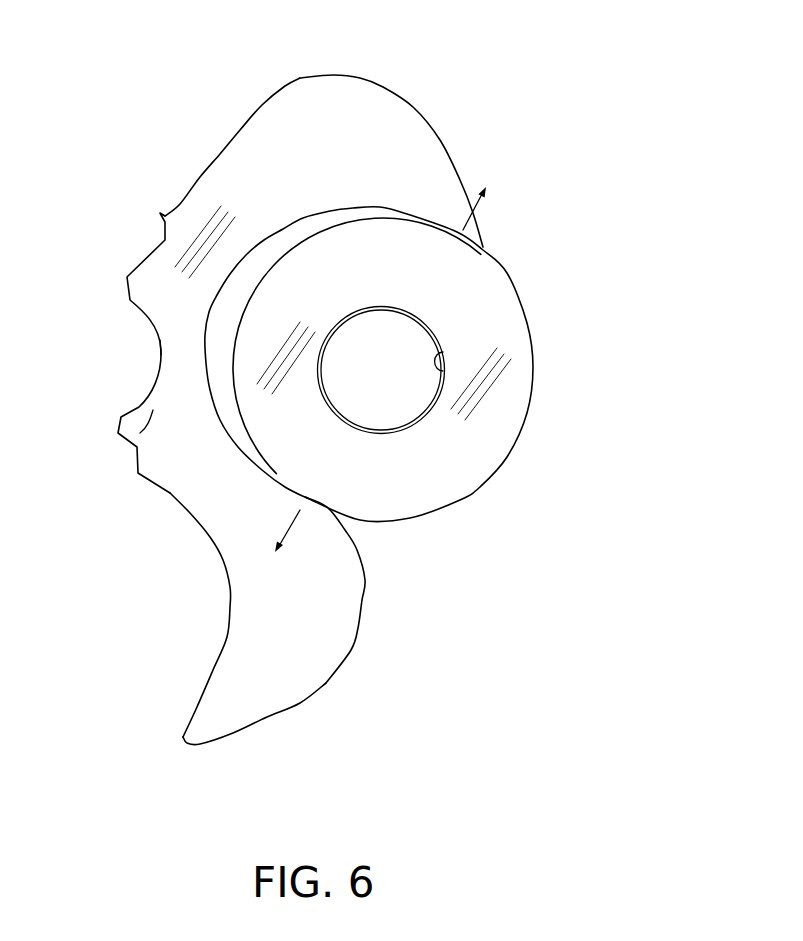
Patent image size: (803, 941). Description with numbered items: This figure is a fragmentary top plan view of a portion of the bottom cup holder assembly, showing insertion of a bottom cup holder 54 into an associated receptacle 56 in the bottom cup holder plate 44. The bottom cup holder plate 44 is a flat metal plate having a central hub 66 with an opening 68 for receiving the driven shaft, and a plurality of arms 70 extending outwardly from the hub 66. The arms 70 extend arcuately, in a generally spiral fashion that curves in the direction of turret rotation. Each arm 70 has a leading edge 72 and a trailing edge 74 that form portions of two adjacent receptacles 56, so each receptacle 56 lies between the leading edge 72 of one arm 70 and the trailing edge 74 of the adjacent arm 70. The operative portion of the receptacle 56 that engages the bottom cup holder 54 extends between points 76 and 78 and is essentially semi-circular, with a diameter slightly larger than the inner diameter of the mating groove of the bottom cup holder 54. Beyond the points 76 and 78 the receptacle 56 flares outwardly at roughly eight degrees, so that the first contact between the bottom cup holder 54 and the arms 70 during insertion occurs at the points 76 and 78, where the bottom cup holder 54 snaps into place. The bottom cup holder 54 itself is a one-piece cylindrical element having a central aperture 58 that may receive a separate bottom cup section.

The bottom cup holder plate 44 is at (162, 197).
The bottom cup holder 54 is at (540, 423).
The receptacle 56 is at (238, 294).
The central aperture 58 is at (448, 365).
The central hub 66 is at (130, 447).
The opening 68 is at (142, 372).
The arm 70 is at (391, 80).
The leading edge 72 is at (272, 93).
The trailing edge 74 is at (350, 210).
The point 76 is at (297, 494).
The point 78 is at (463, 240).